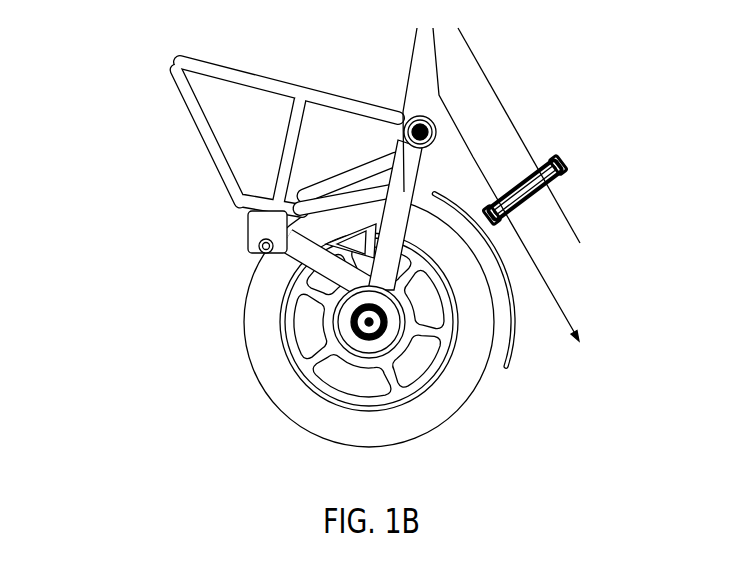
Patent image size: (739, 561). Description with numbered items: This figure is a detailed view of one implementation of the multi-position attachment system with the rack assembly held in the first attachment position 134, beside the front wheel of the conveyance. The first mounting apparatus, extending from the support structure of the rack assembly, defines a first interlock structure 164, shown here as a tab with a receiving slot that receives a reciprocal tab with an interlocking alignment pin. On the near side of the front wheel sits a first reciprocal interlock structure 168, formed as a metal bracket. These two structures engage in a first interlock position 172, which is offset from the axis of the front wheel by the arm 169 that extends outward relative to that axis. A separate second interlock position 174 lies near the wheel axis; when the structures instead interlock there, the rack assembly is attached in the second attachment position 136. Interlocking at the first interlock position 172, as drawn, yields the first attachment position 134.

The first attachment position 134 is at (232, 247).
The second attachment position 136 is at (397, 337).
The first interlock structure 164 is at (256, 228).
The first reciprocal interlock structure 168 is at (352, 216).
The arm 169 is at (297, 250).
The first interlock position 172 is at (259, 250).
The second interlock position 174 is at (364, 330).